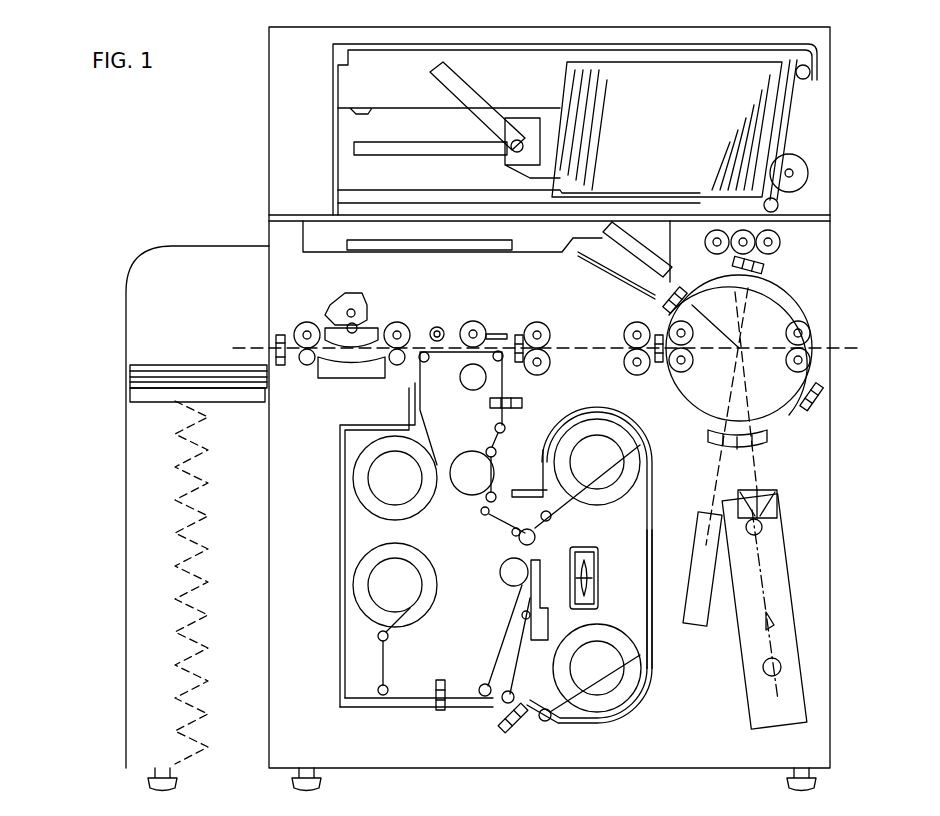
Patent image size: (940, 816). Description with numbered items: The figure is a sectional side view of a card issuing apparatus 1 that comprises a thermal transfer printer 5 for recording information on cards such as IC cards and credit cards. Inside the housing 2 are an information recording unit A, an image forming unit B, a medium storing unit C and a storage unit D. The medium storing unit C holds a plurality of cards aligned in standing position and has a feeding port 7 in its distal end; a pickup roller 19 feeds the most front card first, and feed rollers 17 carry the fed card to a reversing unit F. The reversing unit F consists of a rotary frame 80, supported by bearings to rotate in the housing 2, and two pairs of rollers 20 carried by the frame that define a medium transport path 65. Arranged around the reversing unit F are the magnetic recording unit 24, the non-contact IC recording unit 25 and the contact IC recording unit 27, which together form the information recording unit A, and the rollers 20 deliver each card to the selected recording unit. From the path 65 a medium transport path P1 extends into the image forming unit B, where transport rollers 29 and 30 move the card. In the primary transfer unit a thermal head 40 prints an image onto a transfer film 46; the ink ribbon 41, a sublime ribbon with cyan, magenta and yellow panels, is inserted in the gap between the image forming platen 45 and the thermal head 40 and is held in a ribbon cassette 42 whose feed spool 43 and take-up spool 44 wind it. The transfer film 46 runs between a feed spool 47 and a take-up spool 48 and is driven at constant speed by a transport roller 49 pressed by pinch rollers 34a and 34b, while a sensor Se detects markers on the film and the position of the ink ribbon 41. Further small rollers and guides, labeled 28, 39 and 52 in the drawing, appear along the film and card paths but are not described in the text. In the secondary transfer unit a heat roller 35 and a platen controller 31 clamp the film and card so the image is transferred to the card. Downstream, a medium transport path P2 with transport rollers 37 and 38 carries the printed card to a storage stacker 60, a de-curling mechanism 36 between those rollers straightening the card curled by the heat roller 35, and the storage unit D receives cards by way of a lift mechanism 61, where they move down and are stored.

The card issuing apparatus 1 is at (258, 227).
The housing 2 is at (832, 500).
The thermal transfer printer 5 is at (488, 717).
The feeding port 7 is at (780, 210).
The feed rollers 17 is at (775, 240).
The pickup roller 19 is at (805, 173).
The rollers 20 is at (810, 333).
The magnetic recording unit 24 is at (745, 672).
The non-contact IC recording unit 25 is at (640, 250).
The contact IC recording unit 27 is at (697, 625).
The roller 28 is at (537, 537).
The transport roller 29 is at (630, 322).
The transport roller 30 is at (548, 325).
The platen controller 31 is at (473, 321).
The pinch roller 34a is at (487, 452).
The pinch roller 34b is at (497, 488).
The heat roller 35 is at (462, 380).
The de-curling mechanism 36 is at (323, 292).
The transport roller 37 is at (397, 322).
The transport roller 38 is at (300, 323).
The fan 39 is at (598, 565).
The thermal head 40 is at (530, 628).
The ink ribbon 41 is at (512, 660).
The ribbon cassette 42 is at (647, 530).
The feed spool 43 is at (618, 710).
The take-up spool 44 is at (622, 440).
The image forming platen 45 is at (505, 577).
The transfer film 46 is at (378, 682).
The feed spool 47 is at (352, 478).
The take-up spool 48 is at (417, 613).
The transport roller 49 is at (466, 488).
The roller 52 is at (490, 512).
The storage stacker 60 is at (140, 400).
The lift mechanism 61 is at (197, 558).
The medium transport path 65 is at (760, 370).
The rotary frame 80 is at (790, 290).
The information recording unit A is at (808, 632).
The image forming unit B is at (452, 322).
The medium storing unit C is at (808, 122).
The storage unit D is at (103, 318).
The reversing unit F is at (770, 290).
The medium transport path P1 is at (603, 352).
The medium transport path P2 is at (238, 345).
The sensor Se is at (440, 712).